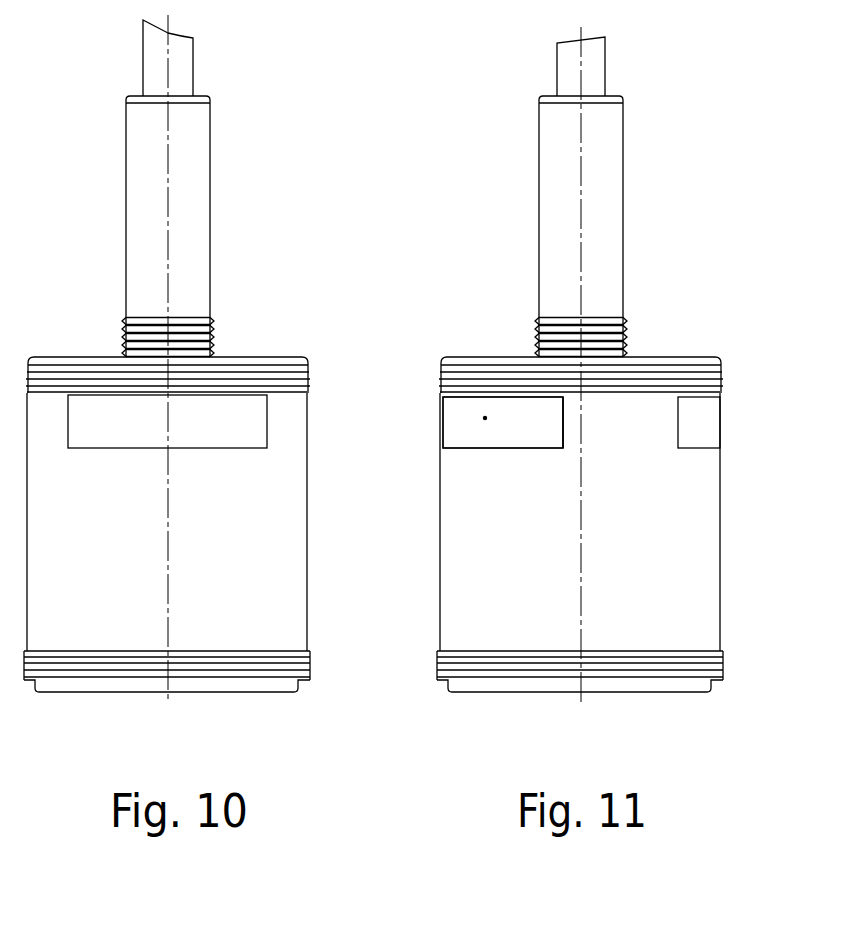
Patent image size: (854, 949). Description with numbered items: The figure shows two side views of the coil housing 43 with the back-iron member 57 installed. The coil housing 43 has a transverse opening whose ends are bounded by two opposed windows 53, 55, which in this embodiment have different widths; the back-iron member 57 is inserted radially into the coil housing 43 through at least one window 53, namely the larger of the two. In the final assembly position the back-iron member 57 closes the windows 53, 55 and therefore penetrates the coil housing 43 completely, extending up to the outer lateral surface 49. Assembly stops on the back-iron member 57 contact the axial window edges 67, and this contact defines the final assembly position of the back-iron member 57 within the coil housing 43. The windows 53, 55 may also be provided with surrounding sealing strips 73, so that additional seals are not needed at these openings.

In FIG. 10, the coil housing 43 is at (416, 716).
In FIG. 10, the outer lateral surface 49 is at (306, 580).
In FIG. 11, the outer lateral surface 49 is at (722, 557).
In FIG. 11, the window 53 is at (538, 449).
In FIG. 11, the window 55 is at (697, 448).
In FIG. 11, the back-iron member 57 is at (485, 418).
In FIG. 11, the axial window edge 67 is at (564, 421).
In FIG. 10, the sealing strip 73 is at (220, 450).